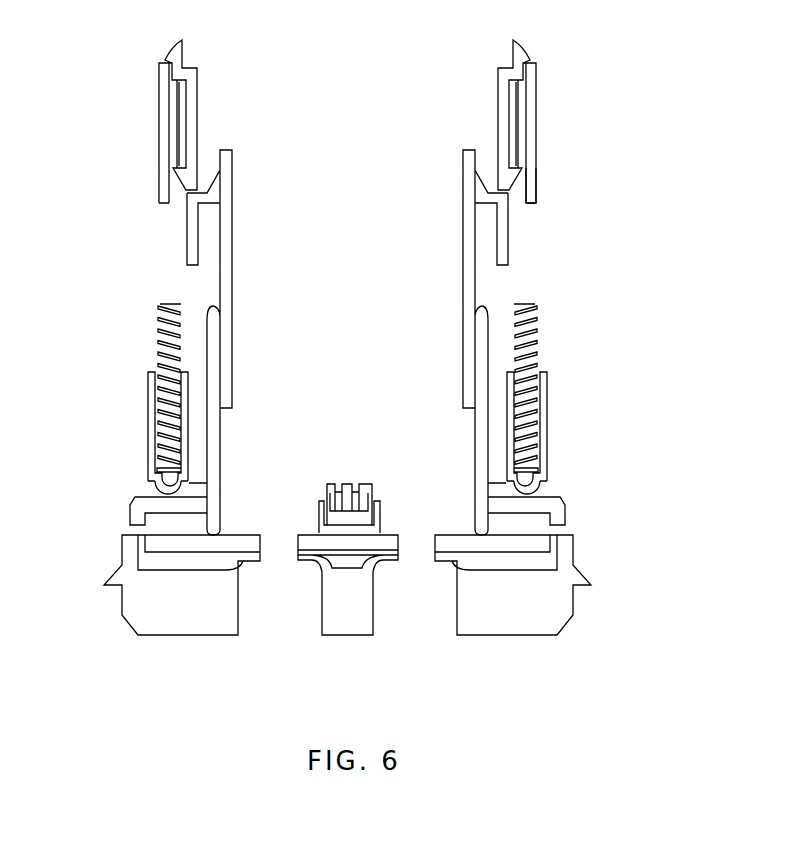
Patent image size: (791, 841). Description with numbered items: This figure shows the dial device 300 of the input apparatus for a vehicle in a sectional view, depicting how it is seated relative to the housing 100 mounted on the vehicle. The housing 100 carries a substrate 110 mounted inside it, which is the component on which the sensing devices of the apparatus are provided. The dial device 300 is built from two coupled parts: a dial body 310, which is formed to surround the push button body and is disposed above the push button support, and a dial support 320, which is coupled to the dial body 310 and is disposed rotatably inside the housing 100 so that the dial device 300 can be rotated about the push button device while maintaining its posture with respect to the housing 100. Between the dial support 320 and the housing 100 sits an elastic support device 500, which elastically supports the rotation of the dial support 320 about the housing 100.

The housing 100 is at (557, 594).
The substrate 110 is at (524, 545).
The dial device 300 is at (543, 168).
The dial body 310 is at (534, 188).
The dial support 320 is at (518, 304).
The elastic support device 500 is at (146, 422).